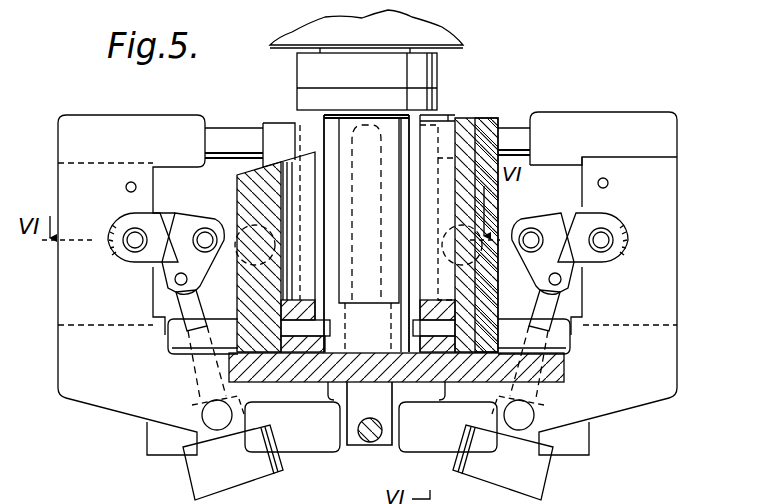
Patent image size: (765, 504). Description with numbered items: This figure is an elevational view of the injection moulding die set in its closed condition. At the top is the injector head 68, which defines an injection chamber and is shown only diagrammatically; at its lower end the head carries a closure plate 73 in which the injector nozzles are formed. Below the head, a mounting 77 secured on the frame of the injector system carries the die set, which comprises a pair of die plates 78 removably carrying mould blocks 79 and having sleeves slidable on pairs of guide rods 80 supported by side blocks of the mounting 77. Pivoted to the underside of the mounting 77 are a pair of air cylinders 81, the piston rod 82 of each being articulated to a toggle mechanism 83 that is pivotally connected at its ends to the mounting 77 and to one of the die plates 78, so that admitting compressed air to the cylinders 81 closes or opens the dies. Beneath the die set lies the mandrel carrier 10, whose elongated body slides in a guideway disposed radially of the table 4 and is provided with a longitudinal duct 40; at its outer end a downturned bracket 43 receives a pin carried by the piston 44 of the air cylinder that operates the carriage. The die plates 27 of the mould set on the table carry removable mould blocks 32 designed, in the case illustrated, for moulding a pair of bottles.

The table 4 is at (455, 378).
The mandrel carrier 10 is at (398, 382).
The die plates 27 is at (258, 167).
The mould blocks 32 is at (262, 296).
The longitudinal duct 40 is at (353, 362).
The downturned bracket 43 is at (352, 447).
The piston 44 is at (376, 445).
The head 68 is at (432, 70).
The closure plate 73 is at (427, 103).
The mounting 77 is at (137, 358).
The die plates 78 is at (352, 354).
The mould blocks 79 is at (403, 122).
The guide rods 80 is at (228, 139).
The air cylinders 81 is at (193, 477).
The piston rod 82 is at (180, 306).
The toggle mechanism 83 is at (176, 211).